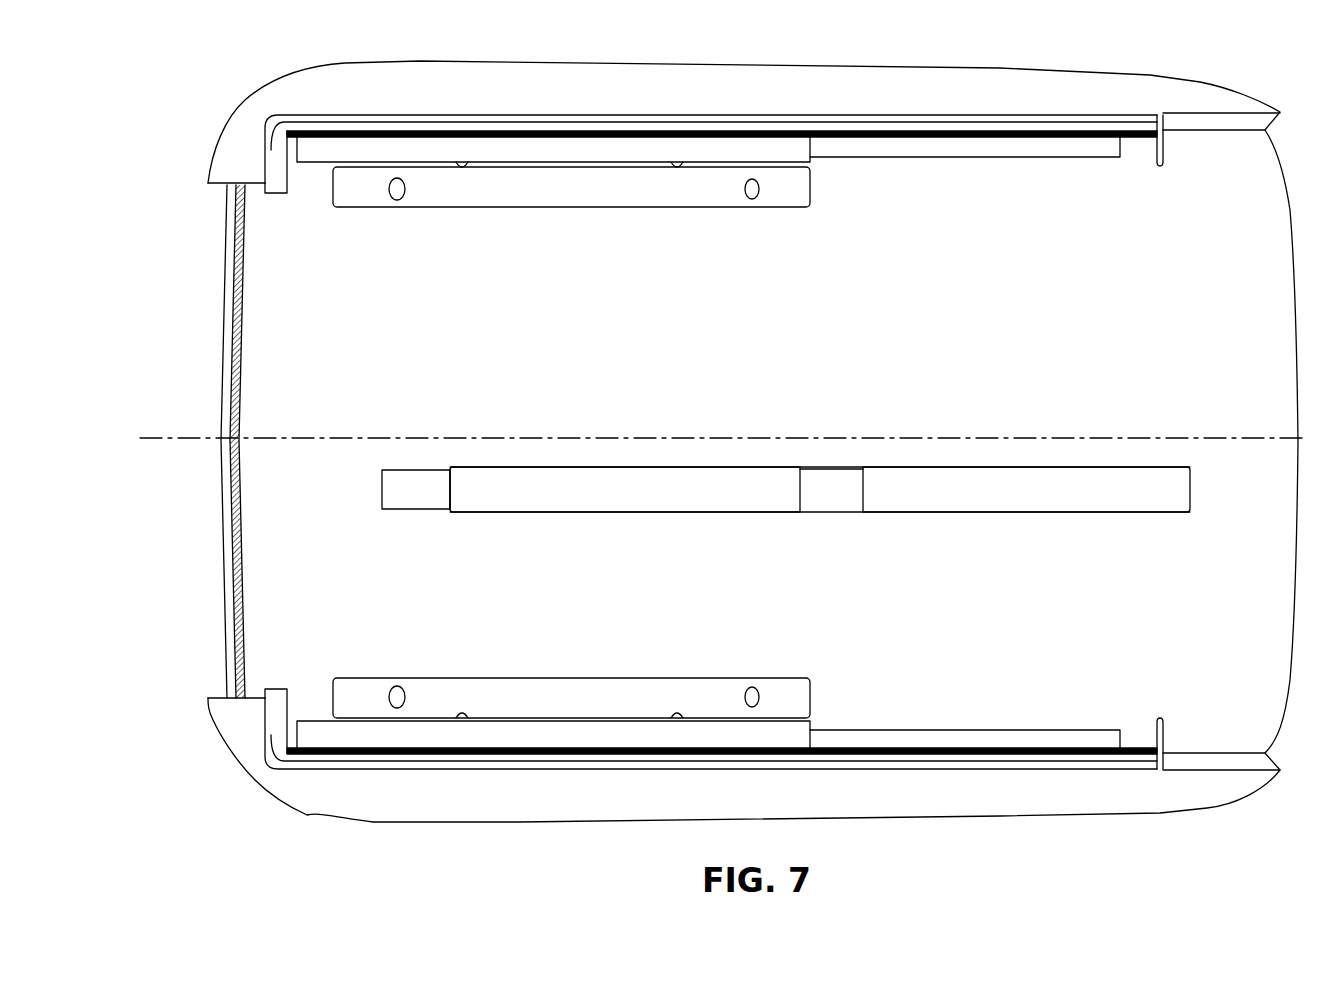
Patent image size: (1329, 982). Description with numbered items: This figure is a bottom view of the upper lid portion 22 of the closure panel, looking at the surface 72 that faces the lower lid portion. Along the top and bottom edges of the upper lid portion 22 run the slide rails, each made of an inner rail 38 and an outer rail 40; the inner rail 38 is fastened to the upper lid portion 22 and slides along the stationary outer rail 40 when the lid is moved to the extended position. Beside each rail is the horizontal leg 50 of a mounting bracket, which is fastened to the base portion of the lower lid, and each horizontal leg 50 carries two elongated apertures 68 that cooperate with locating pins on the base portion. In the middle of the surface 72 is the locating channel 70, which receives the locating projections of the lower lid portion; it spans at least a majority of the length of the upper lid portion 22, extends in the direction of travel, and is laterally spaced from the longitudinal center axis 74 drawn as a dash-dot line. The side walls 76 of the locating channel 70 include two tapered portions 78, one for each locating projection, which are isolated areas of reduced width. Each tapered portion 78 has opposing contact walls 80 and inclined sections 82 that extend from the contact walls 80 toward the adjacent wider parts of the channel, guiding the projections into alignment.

The upper lid portion 22 is at (210, 98).
The inner rail 38 is at (980, 148).
The outer rail 40 is at (489, 150).
The horizontal leg 50 is at (528, 188).
The elongated apertures 68 is at (394, 199).
The locating channel 70 is at (1114, 516).
The surface 72 is at (257, 270).
The longitudinal center axis 74 is at (205, 438).
The side walls 76 is at (1010, 466).
The tapered portions 78 is at (413, 494).
The contact walls 80 is at (417, 470).
The inclined section 82 is at (447, 509).